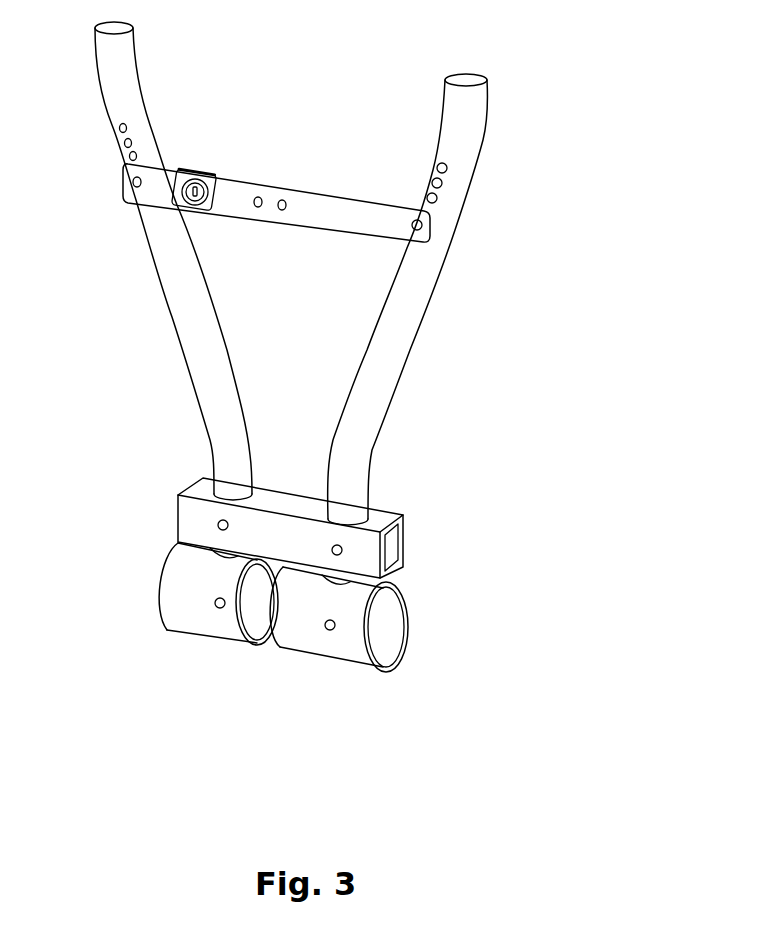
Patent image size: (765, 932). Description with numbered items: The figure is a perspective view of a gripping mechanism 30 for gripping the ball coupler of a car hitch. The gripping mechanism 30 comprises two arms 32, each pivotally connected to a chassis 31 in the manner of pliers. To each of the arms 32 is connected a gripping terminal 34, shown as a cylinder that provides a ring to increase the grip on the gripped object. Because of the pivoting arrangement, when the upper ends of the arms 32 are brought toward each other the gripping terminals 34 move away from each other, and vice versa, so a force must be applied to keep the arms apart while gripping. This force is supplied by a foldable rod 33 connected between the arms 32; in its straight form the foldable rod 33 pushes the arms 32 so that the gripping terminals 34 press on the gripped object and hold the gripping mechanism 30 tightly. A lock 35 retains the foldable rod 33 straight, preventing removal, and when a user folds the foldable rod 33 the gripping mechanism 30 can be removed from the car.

The gripping mechanism 30 is at (573, 93).
The chassis 31 is at (182, 520).
The arms 32 is at (182, 312).
The foldable rod 33 is at (338, 208).
The gripping terminal 34 is at (170, 608).
The lock 35 is at (207, 182).